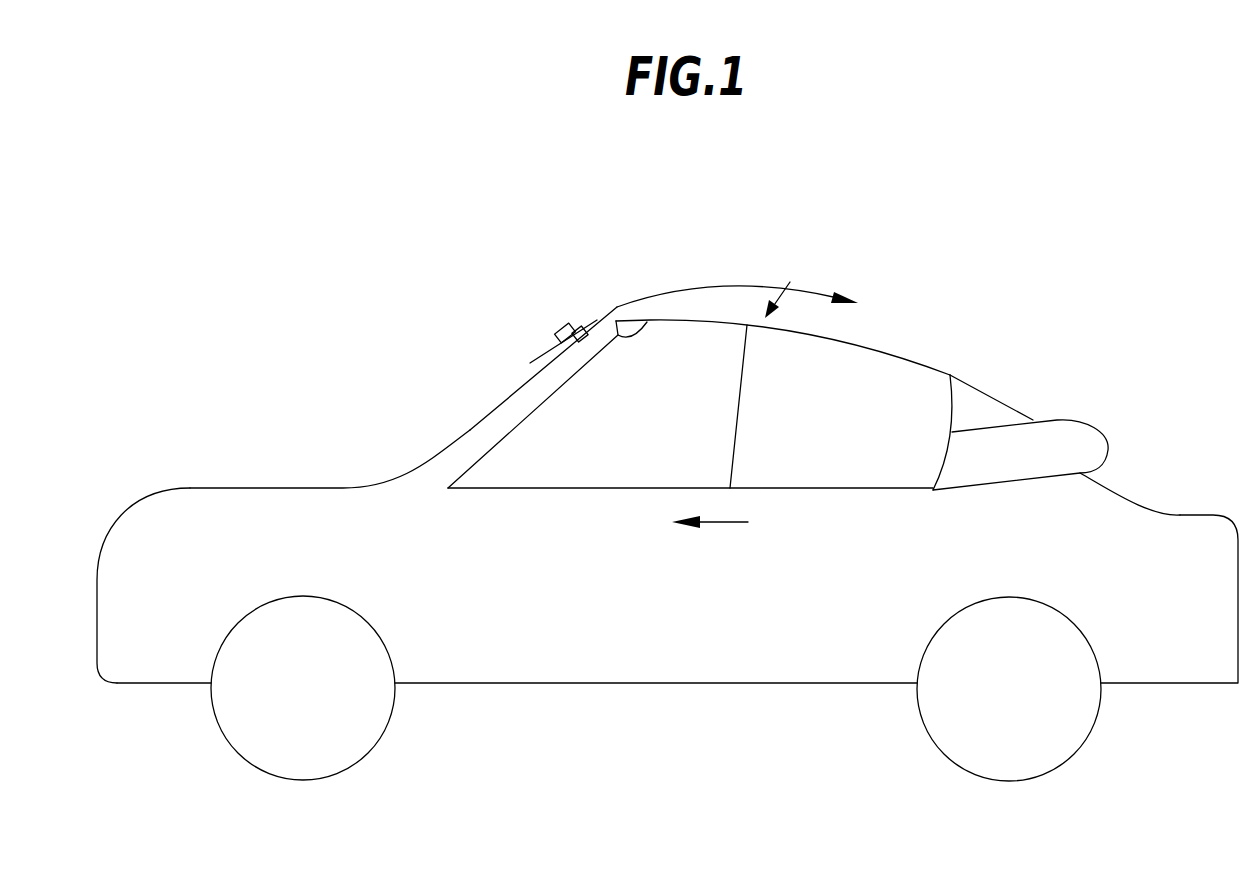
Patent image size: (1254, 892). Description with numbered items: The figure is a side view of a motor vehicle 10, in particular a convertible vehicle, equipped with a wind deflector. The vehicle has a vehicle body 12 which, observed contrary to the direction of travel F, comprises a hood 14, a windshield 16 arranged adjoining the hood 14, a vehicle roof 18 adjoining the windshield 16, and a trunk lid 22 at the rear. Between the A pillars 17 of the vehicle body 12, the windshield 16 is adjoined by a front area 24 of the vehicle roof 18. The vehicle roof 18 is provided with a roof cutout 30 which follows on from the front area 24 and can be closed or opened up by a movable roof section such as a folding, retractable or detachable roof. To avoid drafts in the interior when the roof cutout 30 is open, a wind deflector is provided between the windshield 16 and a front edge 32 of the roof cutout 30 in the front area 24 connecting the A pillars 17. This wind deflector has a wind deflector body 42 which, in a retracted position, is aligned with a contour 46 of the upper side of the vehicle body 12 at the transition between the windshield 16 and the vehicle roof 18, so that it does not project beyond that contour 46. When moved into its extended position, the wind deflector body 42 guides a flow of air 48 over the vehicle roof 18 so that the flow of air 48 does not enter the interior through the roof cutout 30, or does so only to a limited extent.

The motor vehicle 10 is at (596, 645).
The vehicle body 12 is at (790, 640).
The hood 14 is at (260, 488).
The windshield 16 is at (518, 388).
The A pillars 17 is at (495, 433).
The vehicle roof 18 is at (793, 289).
The trunk lid 22 is at (1182, 513).
The front area 24 is at (613, 325).
The roof cutout 30 is at (880, 347).
The front edge 32 is at (653, 323).
The wind deflector body 42 is at (562, 324).
The contour 46 is at (586, 328).
The flow of air 48 is at (790, 282).
The direction of travel F is at (723, 522).